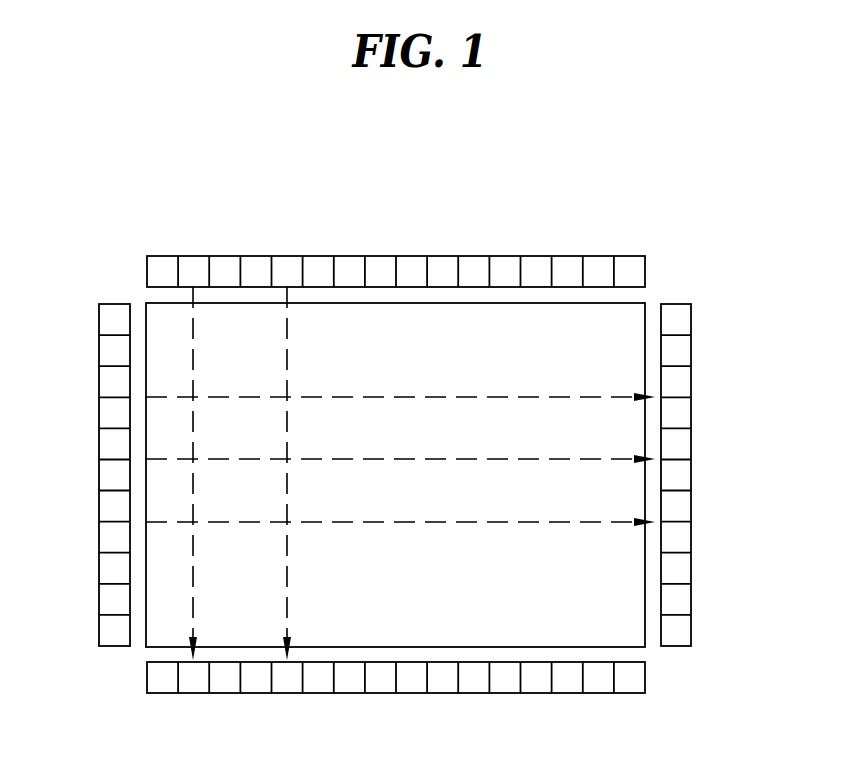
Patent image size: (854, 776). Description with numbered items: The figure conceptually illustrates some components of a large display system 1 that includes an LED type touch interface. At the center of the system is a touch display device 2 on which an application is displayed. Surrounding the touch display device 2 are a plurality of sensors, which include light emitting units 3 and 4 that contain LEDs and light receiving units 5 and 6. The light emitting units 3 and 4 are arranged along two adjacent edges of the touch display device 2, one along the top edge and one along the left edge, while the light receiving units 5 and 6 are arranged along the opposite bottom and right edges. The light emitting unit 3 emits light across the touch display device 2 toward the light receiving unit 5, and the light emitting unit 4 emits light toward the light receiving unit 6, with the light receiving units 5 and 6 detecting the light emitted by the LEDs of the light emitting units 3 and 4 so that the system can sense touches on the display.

The large display system 1 is at (541, 192).
The touch display device 2 is at (456, 592).
The light emitting unit 3 is at (225, 256).
The light emitting unit 4 is at (98, 413).
The light receiving unit 5 is at (409, 694).
The light receiving unit 6 is at (692, 447).